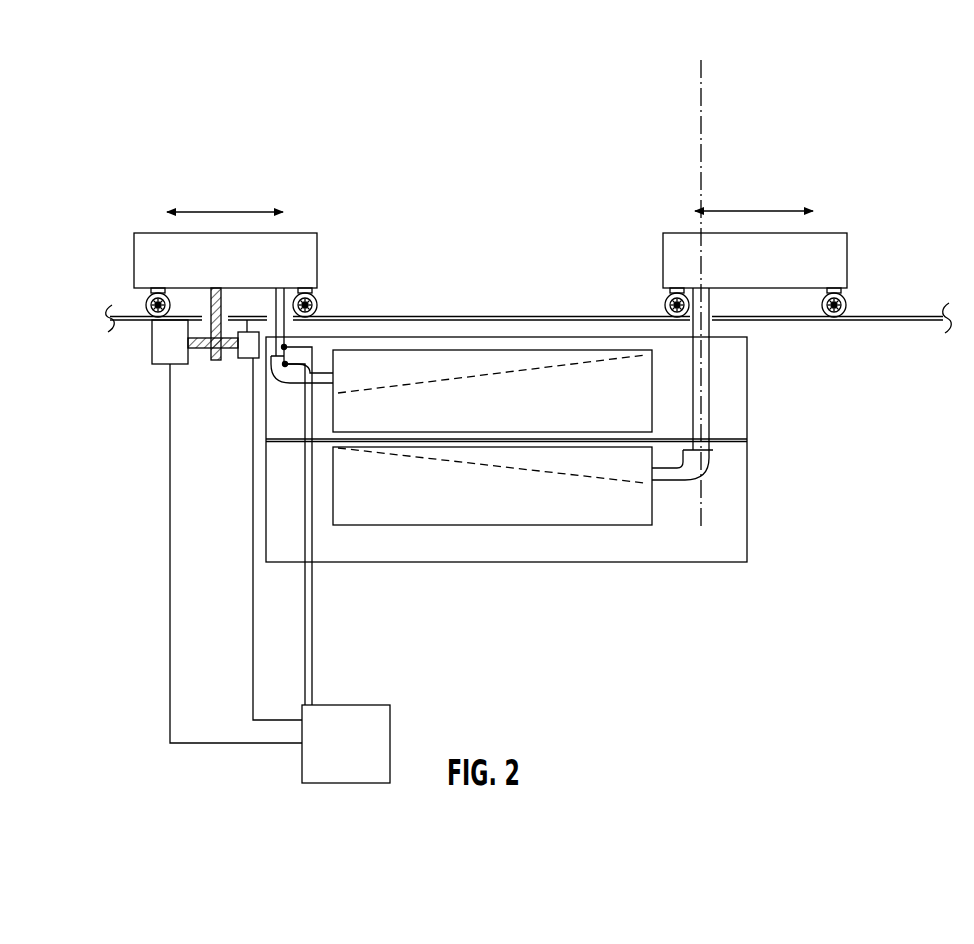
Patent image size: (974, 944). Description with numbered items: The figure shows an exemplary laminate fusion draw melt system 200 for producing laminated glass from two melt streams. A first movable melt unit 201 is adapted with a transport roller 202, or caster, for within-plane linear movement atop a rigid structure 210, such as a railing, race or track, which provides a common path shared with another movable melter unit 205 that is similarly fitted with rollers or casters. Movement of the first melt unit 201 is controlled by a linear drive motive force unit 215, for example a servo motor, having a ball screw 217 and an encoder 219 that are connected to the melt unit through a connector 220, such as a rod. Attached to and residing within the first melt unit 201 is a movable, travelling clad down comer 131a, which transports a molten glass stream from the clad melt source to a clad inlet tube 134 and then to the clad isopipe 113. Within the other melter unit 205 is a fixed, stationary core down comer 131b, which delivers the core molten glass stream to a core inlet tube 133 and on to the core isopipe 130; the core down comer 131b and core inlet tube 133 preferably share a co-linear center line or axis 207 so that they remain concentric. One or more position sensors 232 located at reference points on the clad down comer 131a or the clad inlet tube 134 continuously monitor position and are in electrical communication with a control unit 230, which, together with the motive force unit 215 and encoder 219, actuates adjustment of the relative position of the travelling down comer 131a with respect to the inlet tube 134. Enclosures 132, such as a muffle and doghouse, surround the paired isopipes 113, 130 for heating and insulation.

The laminate fusion draw melt system 200 is at (358, 96).
The first movable melt unit 201 is at (283, 243).
The transport roller 202 is at (145, 305).
The movable melter unit 205 is at (818, 242).
The co-linear center line or axis 207 is at (701, 92).
The rigid structure 210 is at (132, 320).
The linear drive motive force unit 215 is at (168, 365).
The ball screw 217 is at (214, 362).
The encoder 219 is at (252, 359).
The connector 220 is at (211, 302).
The position sensor 232 is at (285, 364).
The movable down comer 131a is at (300, 297).
The fixed down comer 131b is at (710, 377).
The core inlet tube 133 is at (705, 472).
The clad inlet tube 134 is at (283, 384).
The enclosures 132 is at (747, 418).
The core isopipe 130 is at (605, 515).
The clad isopipe 113 is at (512, 417).
The control unit 230 is at (330, 783).